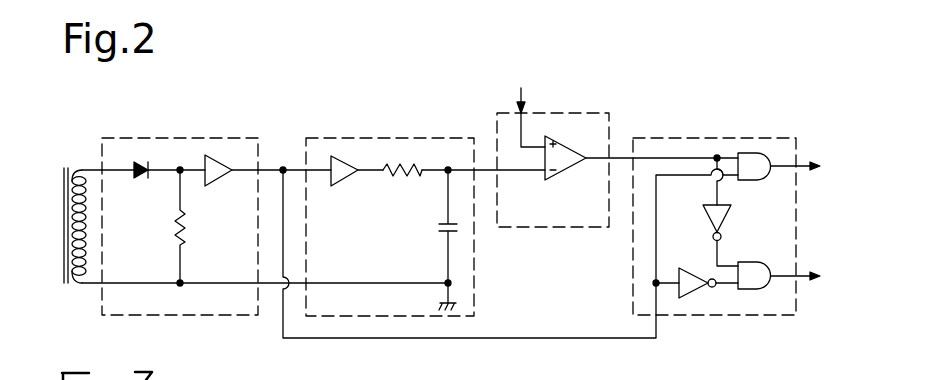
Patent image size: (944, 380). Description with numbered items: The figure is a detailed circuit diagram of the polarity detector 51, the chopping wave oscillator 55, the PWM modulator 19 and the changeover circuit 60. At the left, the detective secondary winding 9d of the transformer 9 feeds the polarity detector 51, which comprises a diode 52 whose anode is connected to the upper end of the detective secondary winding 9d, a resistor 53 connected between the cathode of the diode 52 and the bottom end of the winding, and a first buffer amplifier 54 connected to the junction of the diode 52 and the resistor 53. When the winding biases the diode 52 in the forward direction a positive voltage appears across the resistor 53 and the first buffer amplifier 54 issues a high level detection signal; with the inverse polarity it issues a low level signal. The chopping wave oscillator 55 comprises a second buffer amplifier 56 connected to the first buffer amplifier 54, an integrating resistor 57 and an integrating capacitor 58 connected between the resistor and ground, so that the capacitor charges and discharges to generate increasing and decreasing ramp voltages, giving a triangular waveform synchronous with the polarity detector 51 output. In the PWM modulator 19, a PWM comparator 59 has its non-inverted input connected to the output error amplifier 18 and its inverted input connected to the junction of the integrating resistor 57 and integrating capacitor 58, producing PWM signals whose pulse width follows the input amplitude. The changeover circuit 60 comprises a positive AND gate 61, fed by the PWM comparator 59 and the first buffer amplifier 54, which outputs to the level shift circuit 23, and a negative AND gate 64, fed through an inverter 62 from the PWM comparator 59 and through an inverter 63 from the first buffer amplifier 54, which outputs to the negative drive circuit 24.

The transformer 9 is at (69, 168).
The detective secondary winding 9d is at (71, 285).
The output error amplifier 18 is at (523, 90).
The PWM modulator 19 is at (550, 229).
The level shift circuit 23 is at (813, 168).
The negative drive circuit 24 is at (813, 278).
The polarity detector 51 is at (183, 138).
The diode 52 is at (138, 176).
The resistor 53 is at (185, 232).
The first buffer amplifier 54 is at (215, 183).
The chopping wave oscillator 55 is at (392, 138).
The second buffer amplifier 56 is at (343, 182).
The integrating resistor 57 is at (400, 176).
The integrating capacitor 58 is at (437, 226).
The PWM comparator 59 is at (562, 173).
The changeover circuit 60 is at (718, 137).
The positive AND gate 61 is at (750, 182).
The inverter 62 is at (703, 218).
The inverter 63 is at (698, 291).
The negative AND gate 64 is at (750, 262).